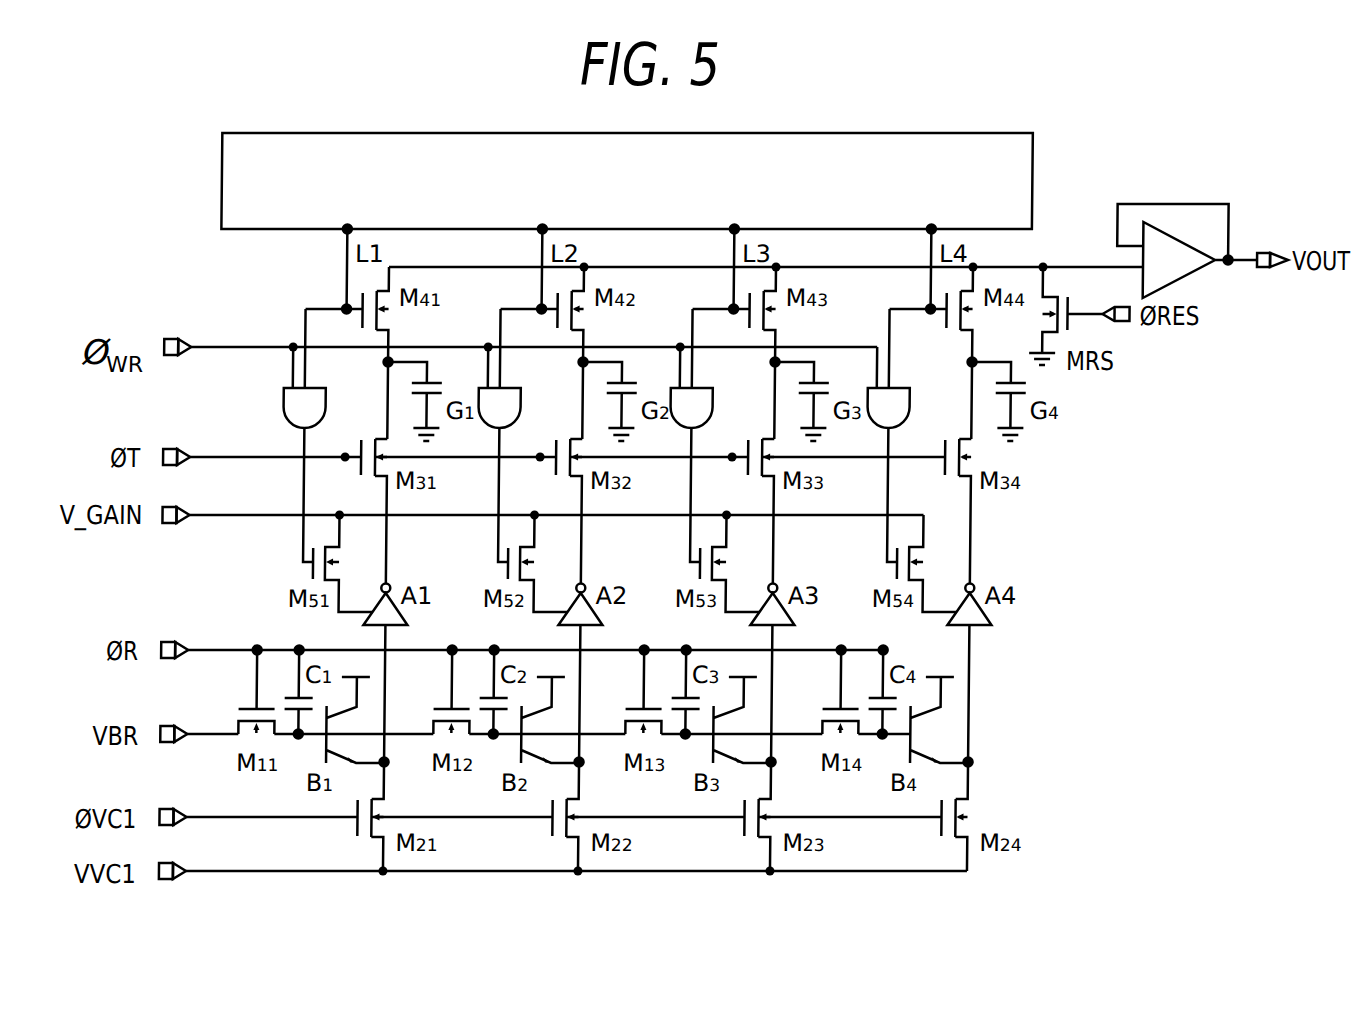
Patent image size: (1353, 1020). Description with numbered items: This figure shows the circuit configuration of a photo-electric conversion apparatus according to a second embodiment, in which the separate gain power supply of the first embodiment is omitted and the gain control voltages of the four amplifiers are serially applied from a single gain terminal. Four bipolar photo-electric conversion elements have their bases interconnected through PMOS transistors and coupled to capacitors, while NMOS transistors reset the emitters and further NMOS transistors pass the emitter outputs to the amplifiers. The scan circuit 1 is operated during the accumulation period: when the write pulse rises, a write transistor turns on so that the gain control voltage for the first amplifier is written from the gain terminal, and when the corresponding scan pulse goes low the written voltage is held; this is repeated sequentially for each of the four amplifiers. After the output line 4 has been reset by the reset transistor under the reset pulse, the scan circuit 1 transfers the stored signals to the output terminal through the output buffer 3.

The scan circuit 1 is at (1032, 175).
The output buffer 3 is at (1190, 275).
The output line 4 is at (1043, 267).